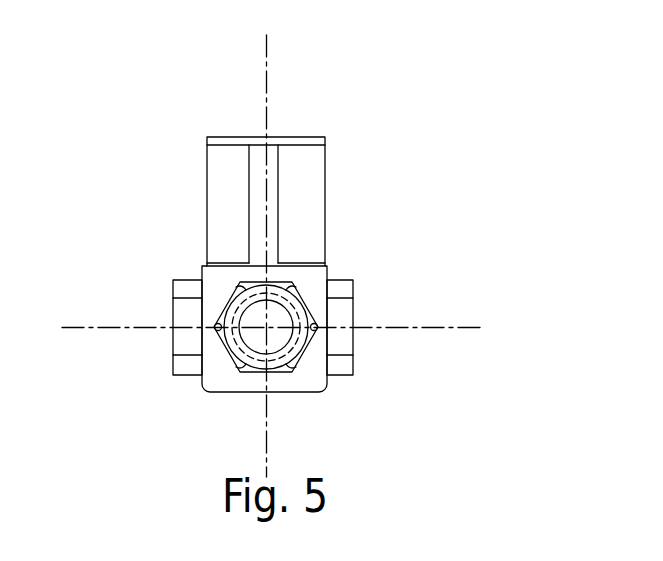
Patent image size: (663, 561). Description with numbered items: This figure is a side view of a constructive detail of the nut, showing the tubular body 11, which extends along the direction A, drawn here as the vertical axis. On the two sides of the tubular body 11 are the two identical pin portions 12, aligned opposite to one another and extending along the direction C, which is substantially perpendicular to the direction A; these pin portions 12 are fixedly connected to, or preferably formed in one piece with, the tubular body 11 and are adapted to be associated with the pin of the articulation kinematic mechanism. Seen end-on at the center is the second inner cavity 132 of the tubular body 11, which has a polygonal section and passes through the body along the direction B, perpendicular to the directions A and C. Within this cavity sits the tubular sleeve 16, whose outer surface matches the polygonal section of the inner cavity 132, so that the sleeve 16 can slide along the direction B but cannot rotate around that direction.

The tubular body 11 is at (381, 192).
The pin portions 12 is at (183, 365).
The tubular sleeve 16 is at (302, 352).
The second inner cavity 132 is at (258, 333).
The direction A is at (267, 60).
The direction B is at (266, 327).
The direction C is at (82, 327).